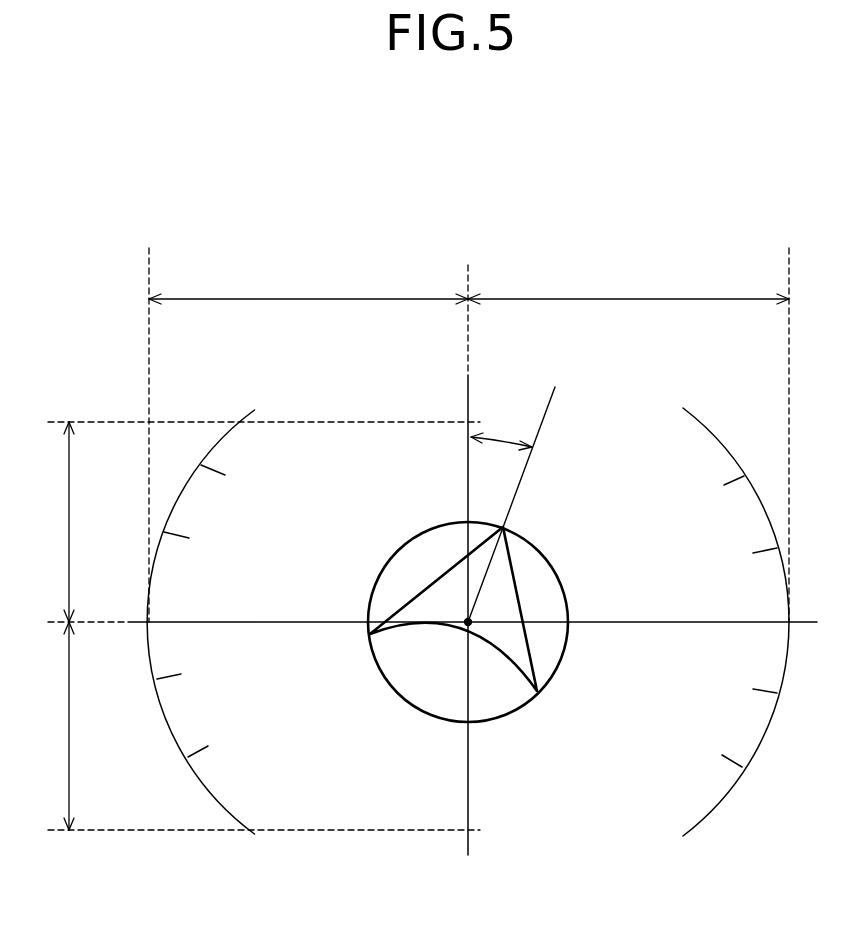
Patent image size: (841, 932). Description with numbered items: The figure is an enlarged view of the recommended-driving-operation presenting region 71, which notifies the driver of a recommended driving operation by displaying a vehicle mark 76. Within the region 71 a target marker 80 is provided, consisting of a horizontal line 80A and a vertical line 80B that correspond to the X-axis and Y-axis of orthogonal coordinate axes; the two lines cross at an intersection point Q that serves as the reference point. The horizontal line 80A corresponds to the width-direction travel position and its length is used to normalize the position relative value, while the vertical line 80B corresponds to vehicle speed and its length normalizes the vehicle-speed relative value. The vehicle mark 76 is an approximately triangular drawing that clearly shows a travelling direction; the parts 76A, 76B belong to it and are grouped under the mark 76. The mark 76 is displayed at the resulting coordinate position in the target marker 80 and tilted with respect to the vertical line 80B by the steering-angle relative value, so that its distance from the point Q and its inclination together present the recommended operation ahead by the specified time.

The recommended-driving-operation presenting region 71 is at (480, 213).
The target marker 80 is at (653, 397).
The horizontal line 80A is at (667, 622).
The vertical line 80B is at (467, 480).
The vehicle mark 76 is at (650, 512).
The inner triangular contour 76A is at (520, 608).
The circular contour 76B is at (544, 552).
The intersection point Q is at (468, 622).